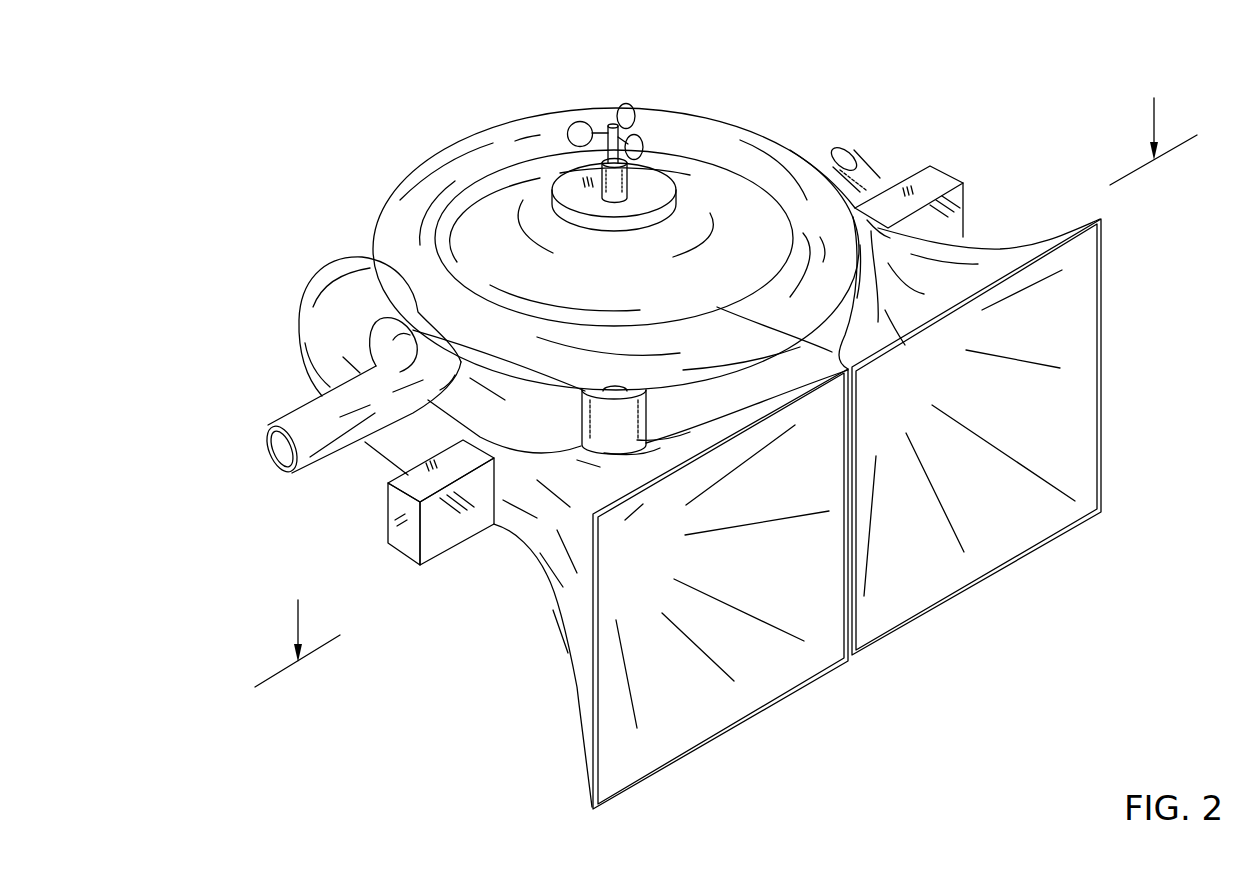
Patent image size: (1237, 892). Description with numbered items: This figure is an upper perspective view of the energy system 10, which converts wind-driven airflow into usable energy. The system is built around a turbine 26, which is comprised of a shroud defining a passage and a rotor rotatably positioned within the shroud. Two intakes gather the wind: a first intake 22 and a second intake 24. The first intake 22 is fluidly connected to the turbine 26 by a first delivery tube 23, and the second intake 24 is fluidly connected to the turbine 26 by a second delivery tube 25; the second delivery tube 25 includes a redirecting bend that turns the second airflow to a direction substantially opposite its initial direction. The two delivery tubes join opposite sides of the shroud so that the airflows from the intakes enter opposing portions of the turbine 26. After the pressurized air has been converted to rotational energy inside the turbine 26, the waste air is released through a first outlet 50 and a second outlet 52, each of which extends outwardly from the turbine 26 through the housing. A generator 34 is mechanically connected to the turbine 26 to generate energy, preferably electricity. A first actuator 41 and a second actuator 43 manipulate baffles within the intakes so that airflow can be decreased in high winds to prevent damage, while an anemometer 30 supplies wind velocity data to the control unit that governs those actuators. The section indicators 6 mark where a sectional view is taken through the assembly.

The energy system 10 is at (258, 153).
The first intake 22 is at (1010, 543).
The first delivery tube 23 is at (891, 186).
The second intake 24 is at (716, 707).
The second delivery tube 25 is at (300, 329).
The turbine 26 is at (766, 145).
The anemometer 30 is at (645, 101).
The generator 34 is at (556, 420).
The first actuator 41 is at (957, 179).
The second actuator 43 is at (395, 542).
The first outlet 50 is at (272, 458).
The second outlet 52 is at (873, 187).
The section line 6- 6 is at (726, 376).